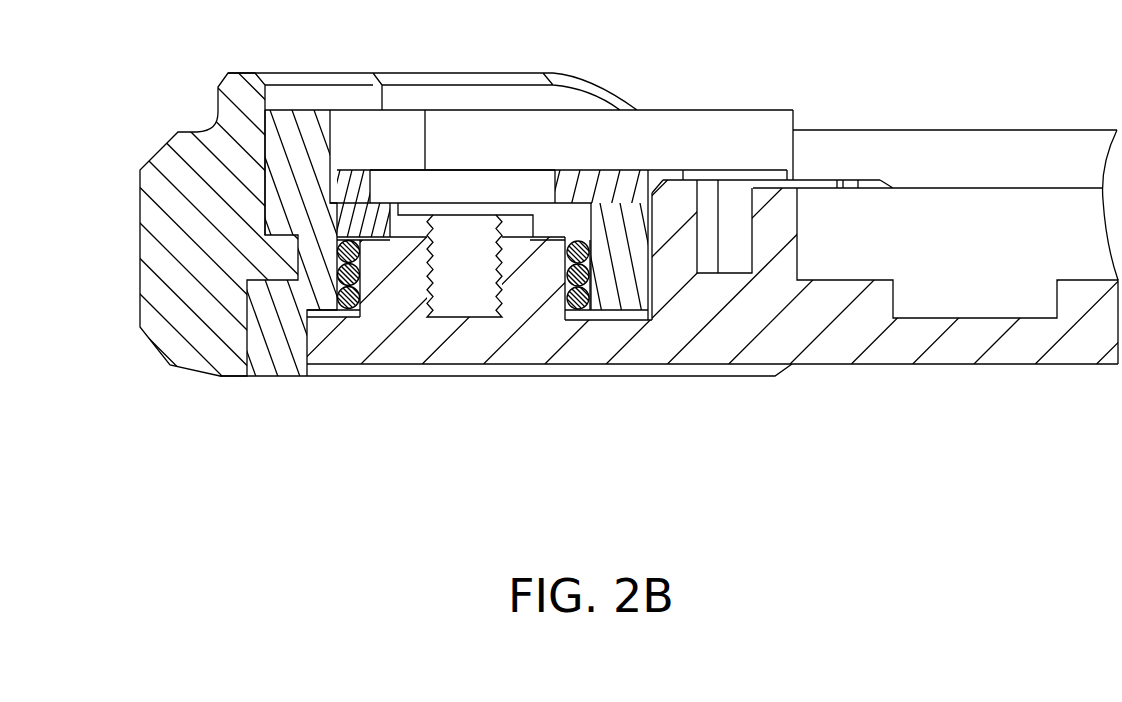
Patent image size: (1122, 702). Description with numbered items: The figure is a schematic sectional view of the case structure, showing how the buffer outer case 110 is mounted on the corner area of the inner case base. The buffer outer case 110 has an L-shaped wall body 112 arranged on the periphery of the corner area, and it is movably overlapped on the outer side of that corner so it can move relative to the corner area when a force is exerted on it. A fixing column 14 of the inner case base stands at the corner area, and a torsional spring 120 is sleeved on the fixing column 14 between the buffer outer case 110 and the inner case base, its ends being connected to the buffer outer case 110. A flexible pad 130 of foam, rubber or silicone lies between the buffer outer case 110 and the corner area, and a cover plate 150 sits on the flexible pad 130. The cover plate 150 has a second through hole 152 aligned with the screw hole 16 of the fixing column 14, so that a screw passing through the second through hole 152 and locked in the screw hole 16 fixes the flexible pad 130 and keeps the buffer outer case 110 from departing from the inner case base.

The buffer outer case 110 is at (283, 230).
The L-shaped wall body 112 is at (172, 157).
The flexible pad 130 is at (297, 130).
The cover plate 150 is at (577, 185).
The second through hole 152 is at (491, 180).
The torsional spring 120 is at (349, 304).
The fixing column 14 is at (406, 290).
The screw hole 16 is at (477, 294).